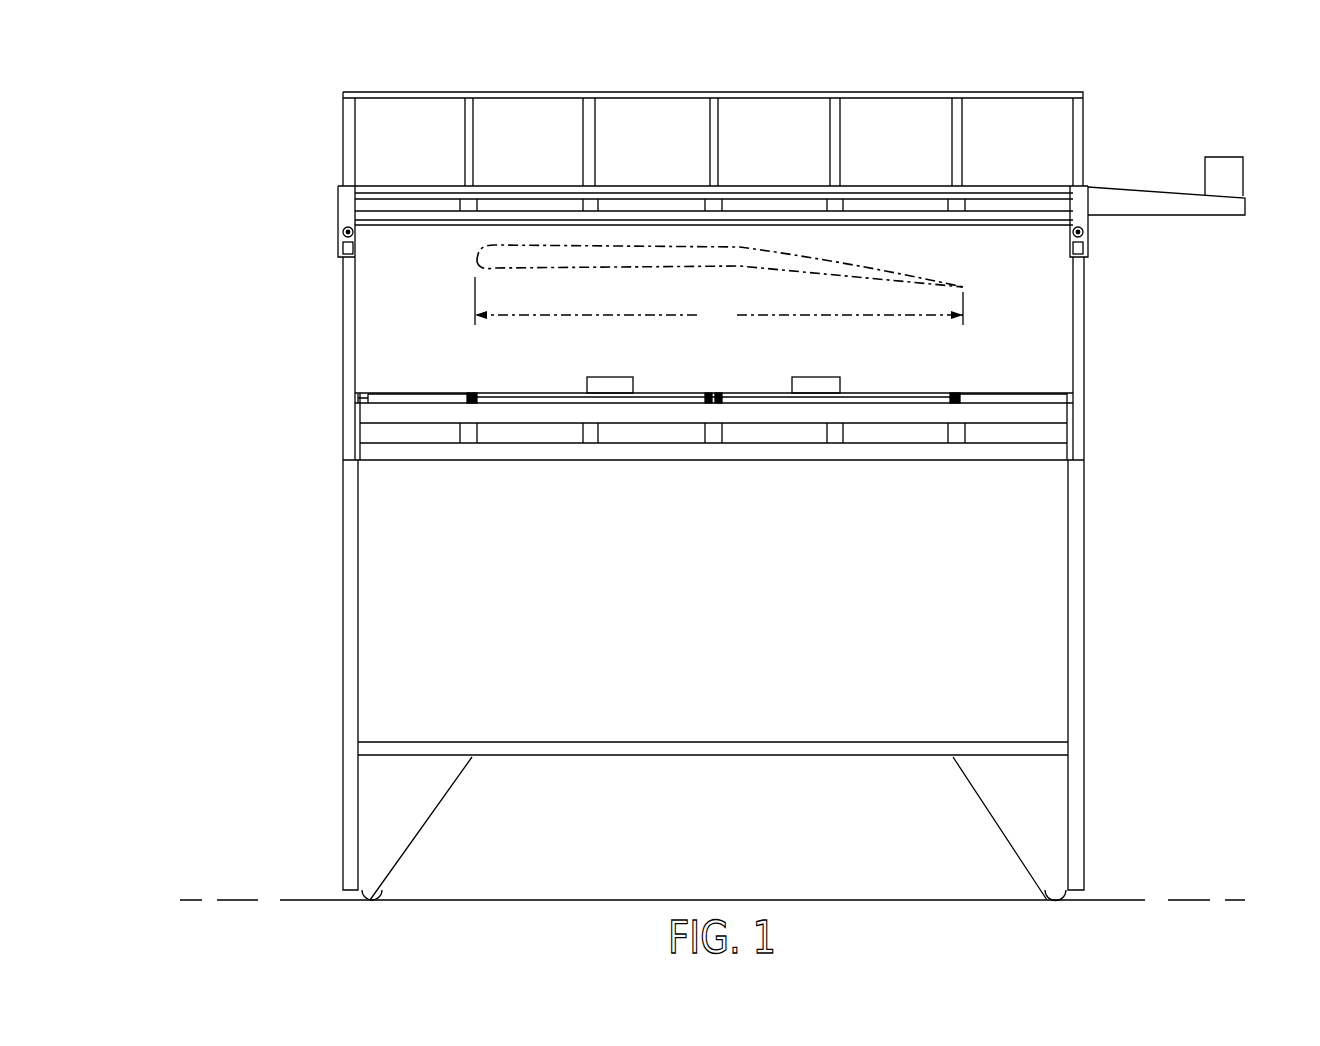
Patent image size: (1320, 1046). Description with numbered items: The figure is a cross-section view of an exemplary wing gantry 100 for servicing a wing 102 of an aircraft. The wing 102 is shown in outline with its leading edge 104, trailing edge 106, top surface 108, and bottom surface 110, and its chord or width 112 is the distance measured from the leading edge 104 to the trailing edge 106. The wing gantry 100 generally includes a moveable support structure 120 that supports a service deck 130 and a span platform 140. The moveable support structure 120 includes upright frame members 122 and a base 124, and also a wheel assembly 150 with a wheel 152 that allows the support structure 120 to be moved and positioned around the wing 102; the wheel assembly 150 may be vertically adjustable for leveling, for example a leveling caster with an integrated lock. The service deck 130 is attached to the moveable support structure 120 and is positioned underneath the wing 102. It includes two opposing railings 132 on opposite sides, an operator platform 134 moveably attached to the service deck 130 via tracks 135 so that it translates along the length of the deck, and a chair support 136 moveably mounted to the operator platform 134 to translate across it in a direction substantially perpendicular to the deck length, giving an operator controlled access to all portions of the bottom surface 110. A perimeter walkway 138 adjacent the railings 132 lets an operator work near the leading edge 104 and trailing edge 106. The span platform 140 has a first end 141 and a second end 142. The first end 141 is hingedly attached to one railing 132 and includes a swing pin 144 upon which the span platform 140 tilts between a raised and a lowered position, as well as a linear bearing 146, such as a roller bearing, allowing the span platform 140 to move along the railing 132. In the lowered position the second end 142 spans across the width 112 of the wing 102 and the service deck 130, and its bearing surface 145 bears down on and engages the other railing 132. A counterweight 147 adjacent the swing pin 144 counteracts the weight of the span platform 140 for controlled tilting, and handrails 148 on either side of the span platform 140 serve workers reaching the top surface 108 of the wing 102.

The wing gantry 100 is at (235, 303).
The wing 102 is at (463, 253).
The leading edge 104 is at (477, 265).
The trailing edge 106 is at (927, 277).
The top surface 108 is at (750, 247).
The bottom surface 110 is at (658, 262).
The width 112 is at (719, 304).
The moveable support structure 120 is at (720, 703).
The frame members 122 is at (348, 582).
The base 124 is at (658, 748).
The service deck 130 is at (763, 467).
The railing 132 is at (352, 370).
The operator platform 134 is at (492, 399).
The tracks 135 is at (471, 392).
The chair support 136 is at (617, 381).
The perimeter walkway 138 is at (435, 398).
The span platform 140 is at (1195, 146).
The first end 141 is at (1087, 177).
The second end 142 is at (325, 203).
The swing pin 144 is at (1084, 232).
The bearing surface 145 is at (345, 258).
The linear bearing 146 is at (1078, 257).
The counterweight 147 is at (1223, 168).
The handrails 148 is at (728, 85).
The wheel assembly 150 is at (408, 810).
The wheel 152 is at (370, 900).